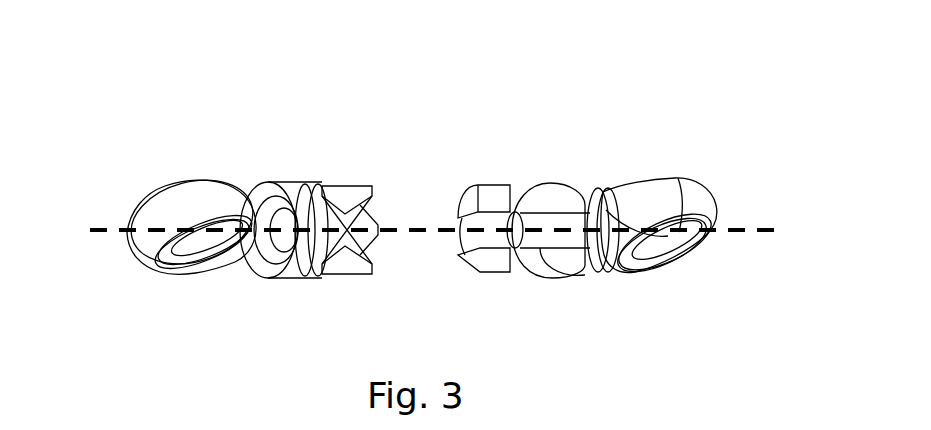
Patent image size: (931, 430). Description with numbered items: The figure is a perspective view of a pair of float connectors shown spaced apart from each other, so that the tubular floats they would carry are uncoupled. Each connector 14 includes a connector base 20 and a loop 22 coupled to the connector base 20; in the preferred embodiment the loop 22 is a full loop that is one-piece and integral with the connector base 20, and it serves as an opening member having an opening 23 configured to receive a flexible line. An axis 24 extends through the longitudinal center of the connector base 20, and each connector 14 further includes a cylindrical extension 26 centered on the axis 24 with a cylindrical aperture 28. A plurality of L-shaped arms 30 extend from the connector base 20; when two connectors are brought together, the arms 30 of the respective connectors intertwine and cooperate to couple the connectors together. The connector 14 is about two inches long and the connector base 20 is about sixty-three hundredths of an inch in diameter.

The connector 14 is at (138, 152).
The connector base 20 is at (429, 250).
The loop 22 is at (373, 291).
The opening 23 is at (182, 253).
The axis 24 is at (400, 235).
The extension 26 is at (540, 208).
The cylindrical aperture 28 is at (503, 217).
The L-shaped arms 30 is at (343, 173).